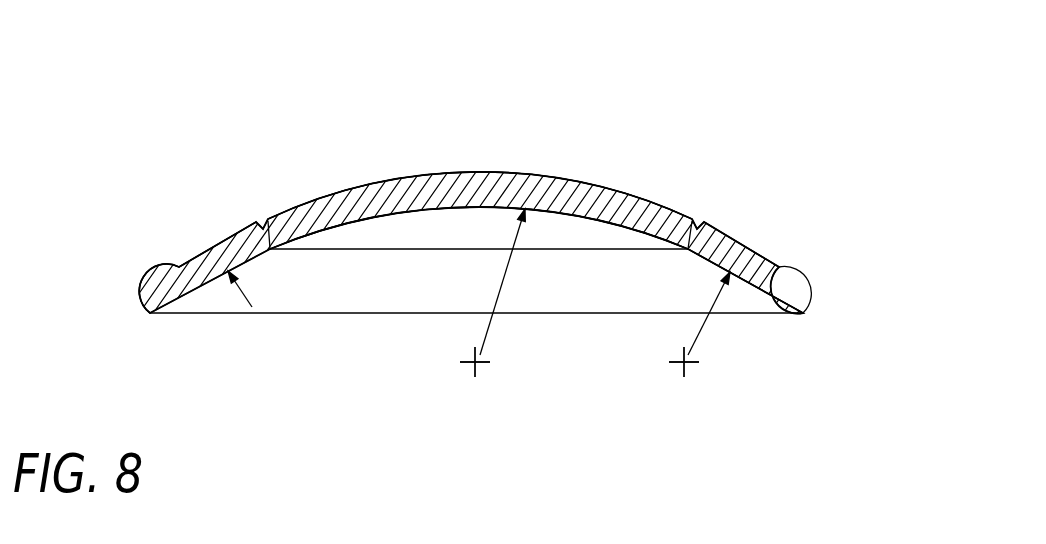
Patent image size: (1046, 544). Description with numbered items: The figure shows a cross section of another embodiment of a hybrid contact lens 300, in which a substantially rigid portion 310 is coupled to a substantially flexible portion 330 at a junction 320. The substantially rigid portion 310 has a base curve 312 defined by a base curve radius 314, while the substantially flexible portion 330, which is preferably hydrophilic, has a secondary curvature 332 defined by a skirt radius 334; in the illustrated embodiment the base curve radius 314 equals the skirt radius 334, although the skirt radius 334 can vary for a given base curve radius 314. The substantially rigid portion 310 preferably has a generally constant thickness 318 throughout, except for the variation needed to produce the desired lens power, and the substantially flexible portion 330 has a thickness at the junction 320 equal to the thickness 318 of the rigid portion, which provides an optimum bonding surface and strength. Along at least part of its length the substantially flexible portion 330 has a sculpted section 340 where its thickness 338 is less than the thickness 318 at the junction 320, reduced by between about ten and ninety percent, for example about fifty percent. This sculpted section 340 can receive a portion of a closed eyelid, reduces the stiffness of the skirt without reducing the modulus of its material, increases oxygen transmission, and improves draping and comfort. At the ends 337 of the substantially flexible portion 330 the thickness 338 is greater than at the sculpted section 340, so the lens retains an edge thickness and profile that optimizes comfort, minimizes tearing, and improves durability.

The hybrid contact lens 300 is at (673, 62).
The substantially rigid portion 310 is at (532, 177).
The base curve 312 is at (377, 183).
The base curve radius 314 is at (490, 323).
The thickness 318 is at (418, 177).
The junction 320 is at (267, 213).
The substantially flexible portion 330 is at (805, 278).
The secondary curvature 332 is at (147, 288).
The skirt radius 334 is at (700, 332).
The ends 337 is at (148, 315).
The thickness 338 is at (216, 244).
The sculpted section 340 is at (742, 248).